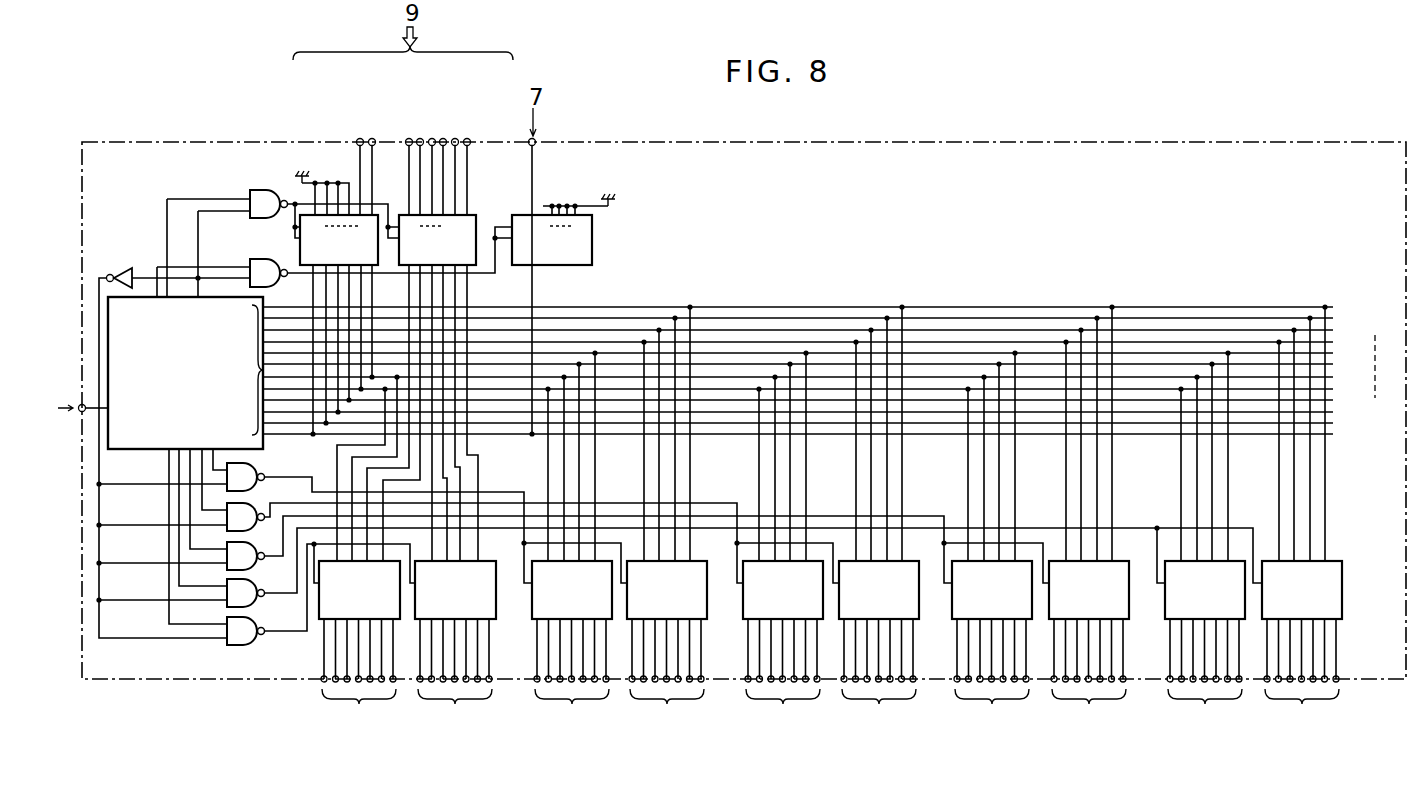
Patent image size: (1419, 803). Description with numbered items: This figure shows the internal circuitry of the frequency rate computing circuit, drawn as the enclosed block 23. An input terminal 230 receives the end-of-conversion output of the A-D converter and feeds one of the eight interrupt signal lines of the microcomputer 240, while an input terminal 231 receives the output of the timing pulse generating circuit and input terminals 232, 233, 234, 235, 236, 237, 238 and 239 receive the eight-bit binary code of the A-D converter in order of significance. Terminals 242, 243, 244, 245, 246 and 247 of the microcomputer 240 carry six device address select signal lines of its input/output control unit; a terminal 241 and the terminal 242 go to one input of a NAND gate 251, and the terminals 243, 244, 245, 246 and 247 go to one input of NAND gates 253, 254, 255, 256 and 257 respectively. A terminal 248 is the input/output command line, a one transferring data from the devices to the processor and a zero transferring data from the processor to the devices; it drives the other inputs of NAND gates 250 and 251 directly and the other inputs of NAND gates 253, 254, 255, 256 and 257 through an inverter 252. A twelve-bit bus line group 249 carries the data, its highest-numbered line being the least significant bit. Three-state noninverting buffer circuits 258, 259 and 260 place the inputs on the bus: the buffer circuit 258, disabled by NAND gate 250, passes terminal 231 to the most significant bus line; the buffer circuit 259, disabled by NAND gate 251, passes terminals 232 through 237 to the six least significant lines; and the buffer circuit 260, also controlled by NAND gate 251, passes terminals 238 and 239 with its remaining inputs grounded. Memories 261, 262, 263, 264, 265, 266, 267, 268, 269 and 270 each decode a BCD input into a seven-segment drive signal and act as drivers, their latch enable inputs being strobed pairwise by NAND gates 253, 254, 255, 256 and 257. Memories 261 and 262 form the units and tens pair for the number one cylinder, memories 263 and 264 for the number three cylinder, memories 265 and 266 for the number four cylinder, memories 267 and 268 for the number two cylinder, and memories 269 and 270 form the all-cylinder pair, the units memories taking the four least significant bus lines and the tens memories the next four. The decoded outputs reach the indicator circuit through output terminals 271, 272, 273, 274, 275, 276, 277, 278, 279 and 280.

The display circuit 23 is at (172, 141).
The input terminal 230 is at (80, 404).
The input terminal 231 is at (534, 140).
The input terminal 232 is at (467, 139).
The input terminal 233 is at (456, 139).
The input terminal 234 is at (443, 139).
The input terminal 235 is at (432, 139).
The input terminal 236 is at (420, 139).
The input terminal 237 is at (408, 139).
The input terminal 238 is at (371, 139).
The input terminal 239 is at (359, 139).
The microcomputer 240 is at (243, 300).
The terminal 241 is at (152, 298).
The terminal 242 is at (167, 298).
The terminal 243 is at (220, 444).
The terminal 244 is at (201, 449).
The terminal 245 is at (188, 449).
The terminal 246 is at (177, 449).
The terminal 247 is at (168, 449).
The terminal 248 is at (202, 298).
The bus line group 249 is at (798, 368).
The NAND gate 250 is at (275, 258).
The NAND gate 251 is at (262, 190).
The inverter 252 is at (173, 437).
The NAND gate 253 is at (255, 466).
The NAND gate 254 is at (222, 510).
The NAND gate 255 is at (222, 549).
The NAND gate 256 is at (222, 586).
The NAND gate 257 is at (254, 640).
The buffer circuit 258 is at (592, 242).
The buffer circuit 259 is at (478, 222).
The buffer circuit 260 is at (336, 304).
The memory 261 is at (455, 590).
The memory 262 is at (359, 590).
The memory 263 is at (667, 461).
The memory 264 is at (572, 484).
The memory 265 is at (879, 461).
The memory 266 is at (783, 484).
The memory 267 is at (1089, 461).
The memory 268 is at (992, 484).
The memory 269 is at (1366, 555).
The memory 270 is at (1205, 484).
The output terminal 271 is at (454, 675).
The output terminal 272 is at (358, 675).
The output terminal 273 is at (666, 675).
The output terminal 274 is at (571, 675).
The output terminal 275 is at (878, 675).
The output terminal 276 is at (782, 675).
The output terminal 277 is at (1088, 675).
The output terminal 278 is at (991, 675).
The output terminal 279 is at (1301, 675).
The output terminal 280 is at (1204, 675).